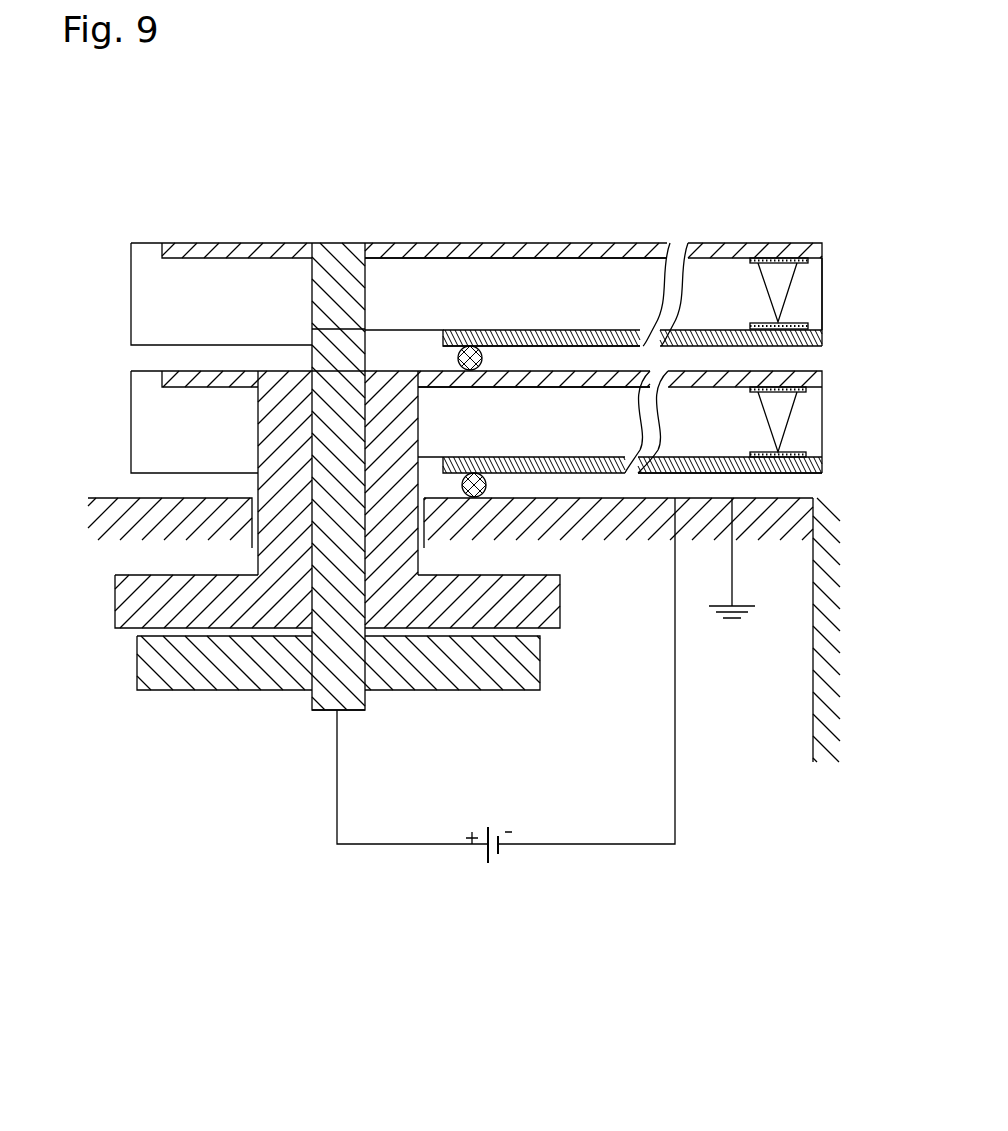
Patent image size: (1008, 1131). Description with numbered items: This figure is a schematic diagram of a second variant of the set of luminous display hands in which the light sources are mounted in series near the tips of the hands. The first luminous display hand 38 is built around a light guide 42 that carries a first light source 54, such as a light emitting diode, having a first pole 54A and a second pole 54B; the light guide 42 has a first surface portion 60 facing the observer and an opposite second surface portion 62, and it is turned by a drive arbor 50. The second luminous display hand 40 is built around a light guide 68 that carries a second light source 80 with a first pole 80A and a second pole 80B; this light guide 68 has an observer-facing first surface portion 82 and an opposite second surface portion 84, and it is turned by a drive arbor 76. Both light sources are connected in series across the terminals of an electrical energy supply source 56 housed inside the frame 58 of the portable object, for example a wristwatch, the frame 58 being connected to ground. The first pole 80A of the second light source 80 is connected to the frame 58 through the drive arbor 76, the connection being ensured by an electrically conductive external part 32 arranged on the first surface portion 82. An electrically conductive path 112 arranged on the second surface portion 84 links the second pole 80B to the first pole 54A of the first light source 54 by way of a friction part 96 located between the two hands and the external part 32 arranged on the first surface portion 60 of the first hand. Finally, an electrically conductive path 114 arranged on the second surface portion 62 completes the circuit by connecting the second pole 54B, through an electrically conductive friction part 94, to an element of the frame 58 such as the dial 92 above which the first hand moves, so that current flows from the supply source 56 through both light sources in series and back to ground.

The light guide 68 is at (118, 320).
The light guide 42 is at (118, 447).
The electrically conductive external part 32 is at (797, 253).
The second surface portion 84 is at (782, 348).
The electrically conductive path 114 is at (823, 466).
The friction part 96 is at (469, 346).
The electrically conductive friction part 94 is at (474, 497).
The first surface portion 60 is at (572, 398).
The second luminous display hand 40 is at (565, 280).
The first surface portion 82 is at (623, 272).
The first luminous display hand 38 is at (722, 396).
The first pole 80A is at (760, 262).
The second pole 80B is at (796, 324).
The second light source 80 is at (773, 280).
The electrically conductive path 112 is at (810, 330).
The first pole 54A is at (812, 393).
The second pole 54B is at (800, 460).
The first light source 54 is at (786, 413).
The second surface portion 62 is at (767, 488).
The dial 92 is at (127, 501).
The drive arbor 50 is at (143, 592).
The drive arbor 76 is at (325, 698).
The frame 58 is at (825, 697).
The electrical energy supply source 56 is at (502, 890).